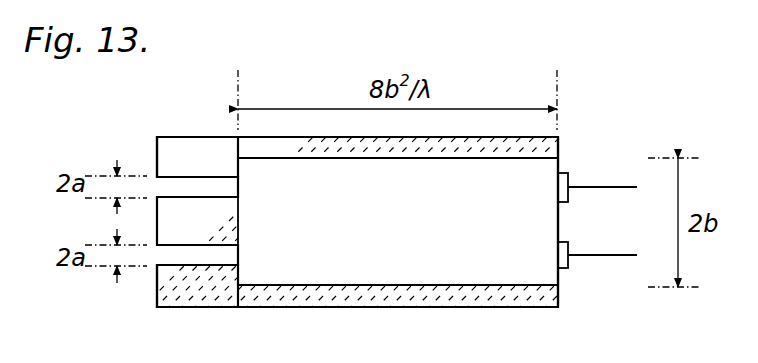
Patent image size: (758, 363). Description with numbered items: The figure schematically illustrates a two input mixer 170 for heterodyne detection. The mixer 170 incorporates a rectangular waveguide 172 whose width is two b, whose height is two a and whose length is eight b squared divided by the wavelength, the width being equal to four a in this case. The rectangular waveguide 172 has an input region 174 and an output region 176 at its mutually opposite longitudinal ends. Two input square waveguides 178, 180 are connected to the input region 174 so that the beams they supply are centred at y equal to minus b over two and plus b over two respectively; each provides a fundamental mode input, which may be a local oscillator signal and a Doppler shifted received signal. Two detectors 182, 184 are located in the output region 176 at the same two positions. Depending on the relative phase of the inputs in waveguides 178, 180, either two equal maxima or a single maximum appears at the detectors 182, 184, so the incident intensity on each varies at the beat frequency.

The two input mixer 170 is at (458, 312).
The rectangular waveguide 172 is at (360, 265).
The input region 174 is at (238, 184).
The output region 176 is at (556, 188).
The input square waveguide 178 is at (171, 182).
The input square waveguide 180 is at (182, 262).
The detector 182 is at (565, 173).
The detector 184 is at (570, 243).